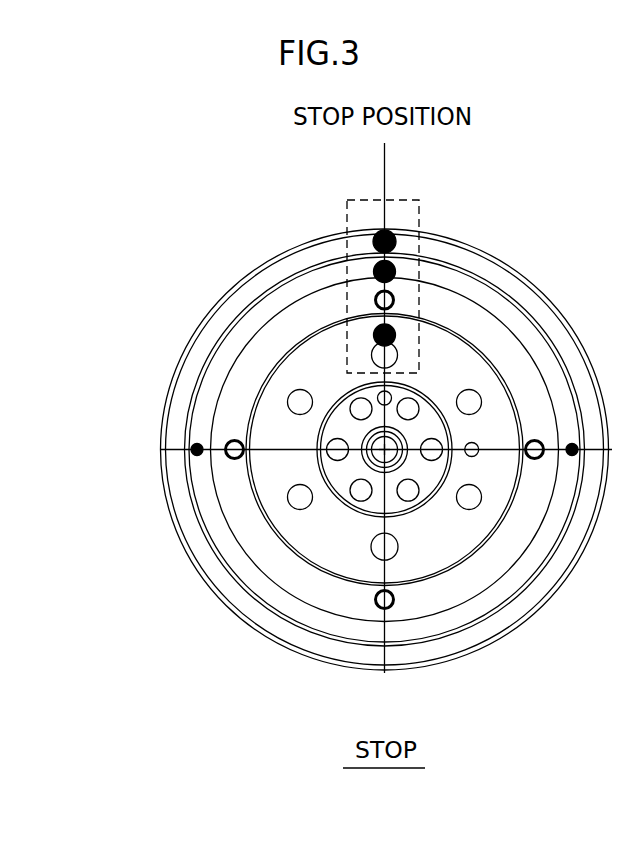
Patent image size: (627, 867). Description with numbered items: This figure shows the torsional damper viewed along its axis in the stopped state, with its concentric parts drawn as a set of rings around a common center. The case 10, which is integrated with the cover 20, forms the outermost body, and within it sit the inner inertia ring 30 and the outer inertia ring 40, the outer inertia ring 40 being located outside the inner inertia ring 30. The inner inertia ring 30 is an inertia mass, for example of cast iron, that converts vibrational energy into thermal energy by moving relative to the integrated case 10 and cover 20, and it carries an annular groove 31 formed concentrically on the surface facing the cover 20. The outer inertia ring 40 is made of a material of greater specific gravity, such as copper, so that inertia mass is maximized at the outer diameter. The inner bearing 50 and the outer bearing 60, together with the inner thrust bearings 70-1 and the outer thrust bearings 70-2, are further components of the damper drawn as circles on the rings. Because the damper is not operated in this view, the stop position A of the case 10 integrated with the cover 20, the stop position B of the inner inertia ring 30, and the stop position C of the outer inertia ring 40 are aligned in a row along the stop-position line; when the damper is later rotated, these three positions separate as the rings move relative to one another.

The case 10 is at (303, 657).
The cover 20 is at (322, 533).
The inner inertia ring 30 is at (273, 337).
The annular groove 31 is at (215, 342).
The outer inertia ring 40 is at (425, 653).
The inner bearing 50 is at (317, 332).
The outer bearing 60 is at (488, 620).
The inner thrust bearings 70-1 is at (232, 455).
The outer thrust bearings 70-2 is at (195, 453).
The stop position of the case A is at (394, 333).
The stop position of the inner inertia ring B is at (394, 268).
The stop position of the outer inertia ring C is at (393, 238).